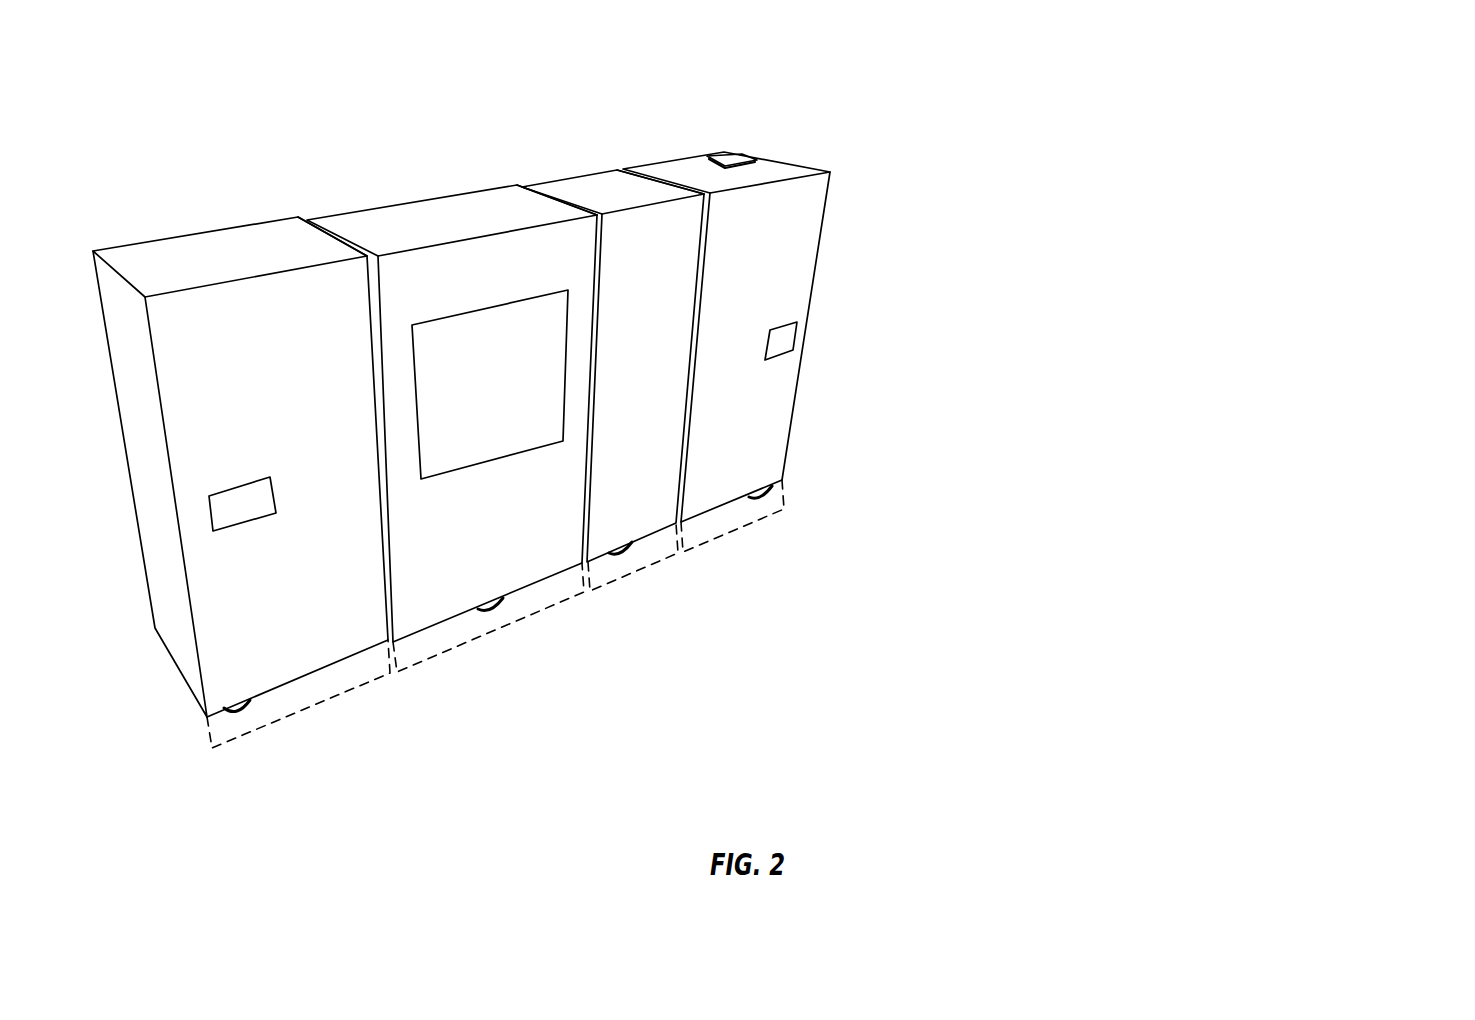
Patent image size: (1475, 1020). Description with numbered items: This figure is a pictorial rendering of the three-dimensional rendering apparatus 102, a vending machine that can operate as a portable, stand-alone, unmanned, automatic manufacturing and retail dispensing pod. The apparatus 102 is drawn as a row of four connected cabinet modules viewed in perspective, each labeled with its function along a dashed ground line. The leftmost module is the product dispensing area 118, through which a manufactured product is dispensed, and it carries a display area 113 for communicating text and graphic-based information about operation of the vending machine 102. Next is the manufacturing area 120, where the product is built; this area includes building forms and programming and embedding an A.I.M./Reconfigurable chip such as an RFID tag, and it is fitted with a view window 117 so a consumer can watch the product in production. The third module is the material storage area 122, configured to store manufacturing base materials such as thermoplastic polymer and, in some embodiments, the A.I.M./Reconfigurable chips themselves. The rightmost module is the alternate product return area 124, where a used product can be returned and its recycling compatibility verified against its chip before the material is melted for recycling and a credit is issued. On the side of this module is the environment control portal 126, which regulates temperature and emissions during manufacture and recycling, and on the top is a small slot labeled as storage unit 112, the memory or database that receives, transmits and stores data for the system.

The three-dimensional rendering apparatus 102 is at (170, 88).
The storage unit 112 is at (733, 152).
The display area 113 is at (243, 525).
The view window 117 is at (490, 462).
The product dispensing area 118 is at (308, 708).
The manufacturing area 120 is at (651, 465).
The material storage area 122 is at (633, 572).
The product return area 124 is at (1034, 345).
The environment control portal 126 is at (783, 340).